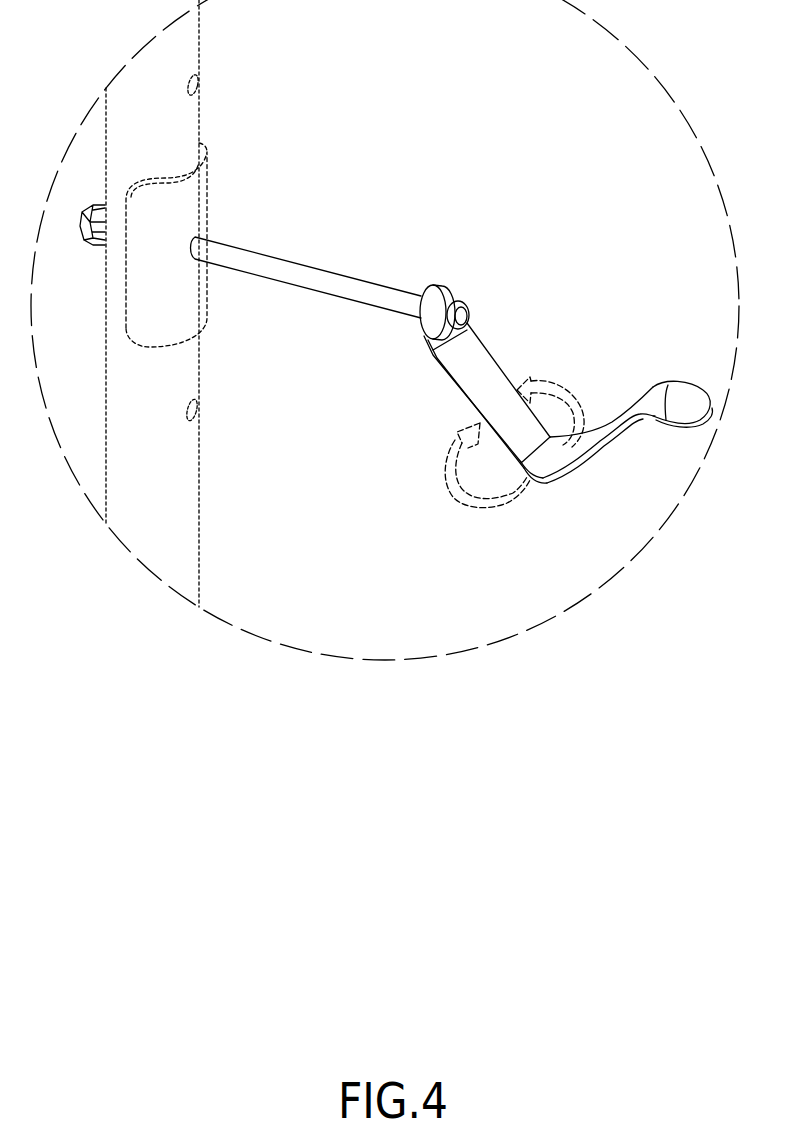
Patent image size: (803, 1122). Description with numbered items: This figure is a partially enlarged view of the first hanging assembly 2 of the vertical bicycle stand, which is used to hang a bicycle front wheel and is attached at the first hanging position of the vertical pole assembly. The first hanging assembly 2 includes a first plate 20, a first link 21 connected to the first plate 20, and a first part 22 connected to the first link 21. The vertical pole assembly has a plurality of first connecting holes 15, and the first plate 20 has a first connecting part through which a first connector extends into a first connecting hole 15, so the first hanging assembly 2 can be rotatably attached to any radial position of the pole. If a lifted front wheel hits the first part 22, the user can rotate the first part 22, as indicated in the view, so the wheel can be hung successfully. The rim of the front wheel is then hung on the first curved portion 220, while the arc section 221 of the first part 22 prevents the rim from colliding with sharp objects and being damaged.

The first connecting hole 15 is at (197, 86).
The first hanging assembly 2 is at (498, 165).
The first plate 20 is at (206, 203).
The first link 21 is at (322, 282).
The first part 22 is at (568, 428).
The first curved portion 220 is at (549, 465).
The arc section 221 is at (686, 398).